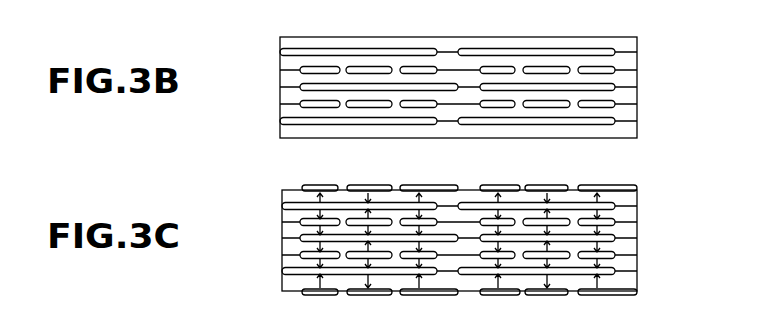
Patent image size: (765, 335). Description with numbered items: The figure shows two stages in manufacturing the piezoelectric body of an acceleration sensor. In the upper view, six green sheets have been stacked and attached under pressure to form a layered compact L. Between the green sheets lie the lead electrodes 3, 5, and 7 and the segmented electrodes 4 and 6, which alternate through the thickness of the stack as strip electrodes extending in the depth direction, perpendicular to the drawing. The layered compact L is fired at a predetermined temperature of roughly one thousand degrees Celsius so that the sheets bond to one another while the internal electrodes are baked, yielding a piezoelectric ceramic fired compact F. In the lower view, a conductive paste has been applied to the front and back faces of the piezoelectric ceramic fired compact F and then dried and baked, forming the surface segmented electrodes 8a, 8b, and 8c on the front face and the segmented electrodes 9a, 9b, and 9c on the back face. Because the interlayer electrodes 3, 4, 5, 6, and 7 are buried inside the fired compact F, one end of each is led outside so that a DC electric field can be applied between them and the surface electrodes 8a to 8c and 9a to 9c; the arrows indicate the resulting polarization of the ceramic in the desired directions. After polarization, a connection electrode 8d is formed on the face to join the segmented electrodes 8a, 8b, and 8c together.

In FIG. 3B, the lead electrode 3 is at (594, 52).
In FIG. 3C, the lead electrode 3 is at (292, 204).
In FIG. 3B, the segmented electrode 4 is at (550, 70).
In FIG. 3C, the segmented electrode 4 is at (300, 222).
In FIG. 3B, the lead electrode 5 is at (497, 87).
In FIG. 3C, the lead electrode 5 is at (300, 238).
In FIG. 3B, the segmented electrode 6 is at (530, 106).
In FIG. 3C, the segmented electrode 6 is at (302, 257).
In FIG. 3B, the lead electrode 7 is at (482, 122).
In FIG. 3C, the lead electrode 7 is at (292, 276).
In FIG. 3C, the segmented electrode 8a is at (365, 184).
In FIG. 3C, the segmented electrode 8b is at (330, 184).
In FIG. 3C, the segmented electrode 8c is at (419, 184).
In FIG. 3C, the connection electrode 8d is at (549, 312).
In FIG. 3C, the segmented electrode 9a is at (372, 297).
In FIG. 3C, the segmented electrode 9b is at (318, 296).
In FIG. 3C, the segmented electrode 9c is at (425, 297).
In FIG. 3B, the layered compact L is at (645, 95).
In FIG. 3C, the piezoelectric ceramic fired compact F is at (645, 243).